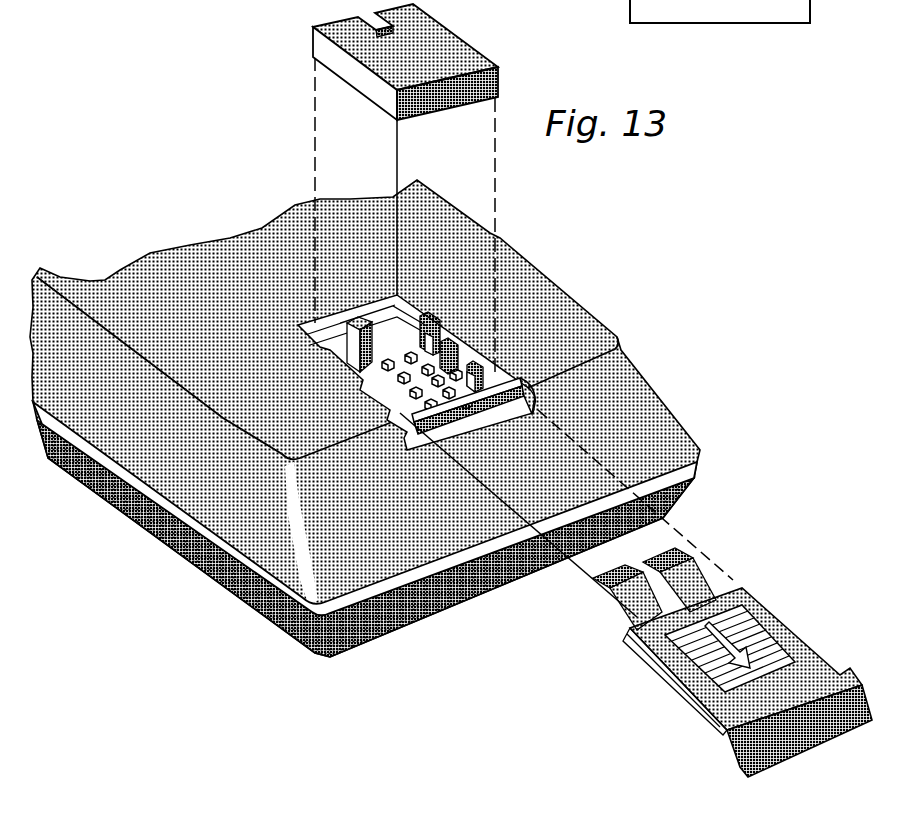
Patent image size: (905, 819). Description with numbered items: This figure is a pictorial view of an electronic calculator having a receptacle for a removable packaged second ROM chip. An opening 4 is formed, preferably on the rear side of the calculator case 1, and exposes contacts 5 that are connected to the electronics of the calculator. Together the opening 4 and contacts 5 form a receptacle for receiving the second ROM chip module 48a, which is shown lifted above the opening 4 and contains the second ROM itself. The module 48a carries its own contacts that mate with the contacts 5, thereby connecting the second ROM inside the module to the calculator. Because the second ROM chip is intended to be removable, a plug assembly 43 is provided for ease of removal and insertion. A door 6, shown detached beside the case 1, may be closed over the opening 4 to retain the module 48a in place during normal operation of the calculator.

The calculator case 1 is at (657, 386).
The plug assembly 43 is at (450, 266).
The contacts 5 is at (437, 373).
The opening 4 is at (503, 378).
The second ROM chip module 48a is at (457, 35).
The door 6 is at (726, 733).